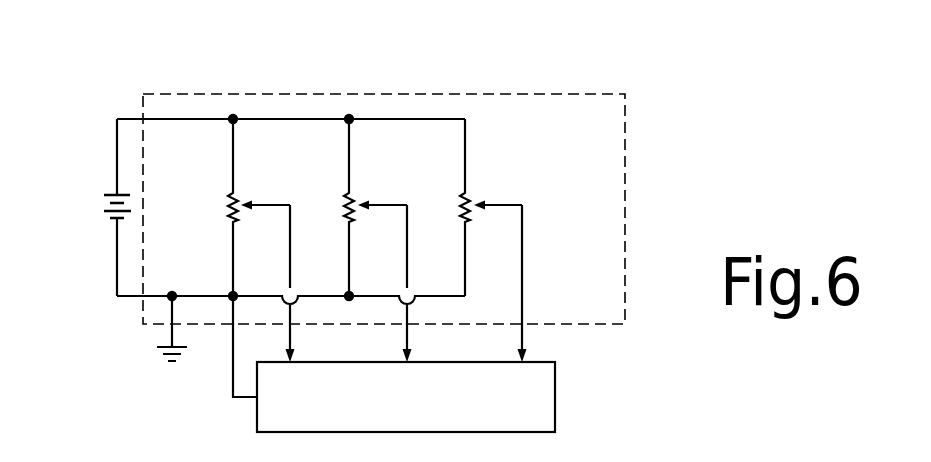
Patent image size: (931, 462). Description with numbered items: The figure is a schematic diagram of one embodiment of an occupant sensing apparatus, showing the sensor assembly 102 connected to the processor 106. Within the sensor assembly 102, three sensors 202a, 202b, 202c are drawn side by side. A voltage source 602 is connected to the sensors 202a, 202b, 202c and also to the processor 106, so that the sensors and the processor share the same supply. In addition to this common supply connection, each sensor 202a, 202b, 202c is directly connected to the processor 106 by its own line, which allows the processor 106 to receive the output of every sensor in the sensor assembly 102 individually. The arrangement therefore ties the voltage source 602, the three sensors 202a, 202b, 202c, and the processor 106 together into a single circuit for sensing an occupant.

The sensor assembly 102 is at (532, 94).
The voltage source 602 is at (105, 212).
The sensor 202a is at (237, 194).
The sensor 202b is at (353, 193).
The sensor 202c is at (469, 193).
The processor 106 is at (555, 392).